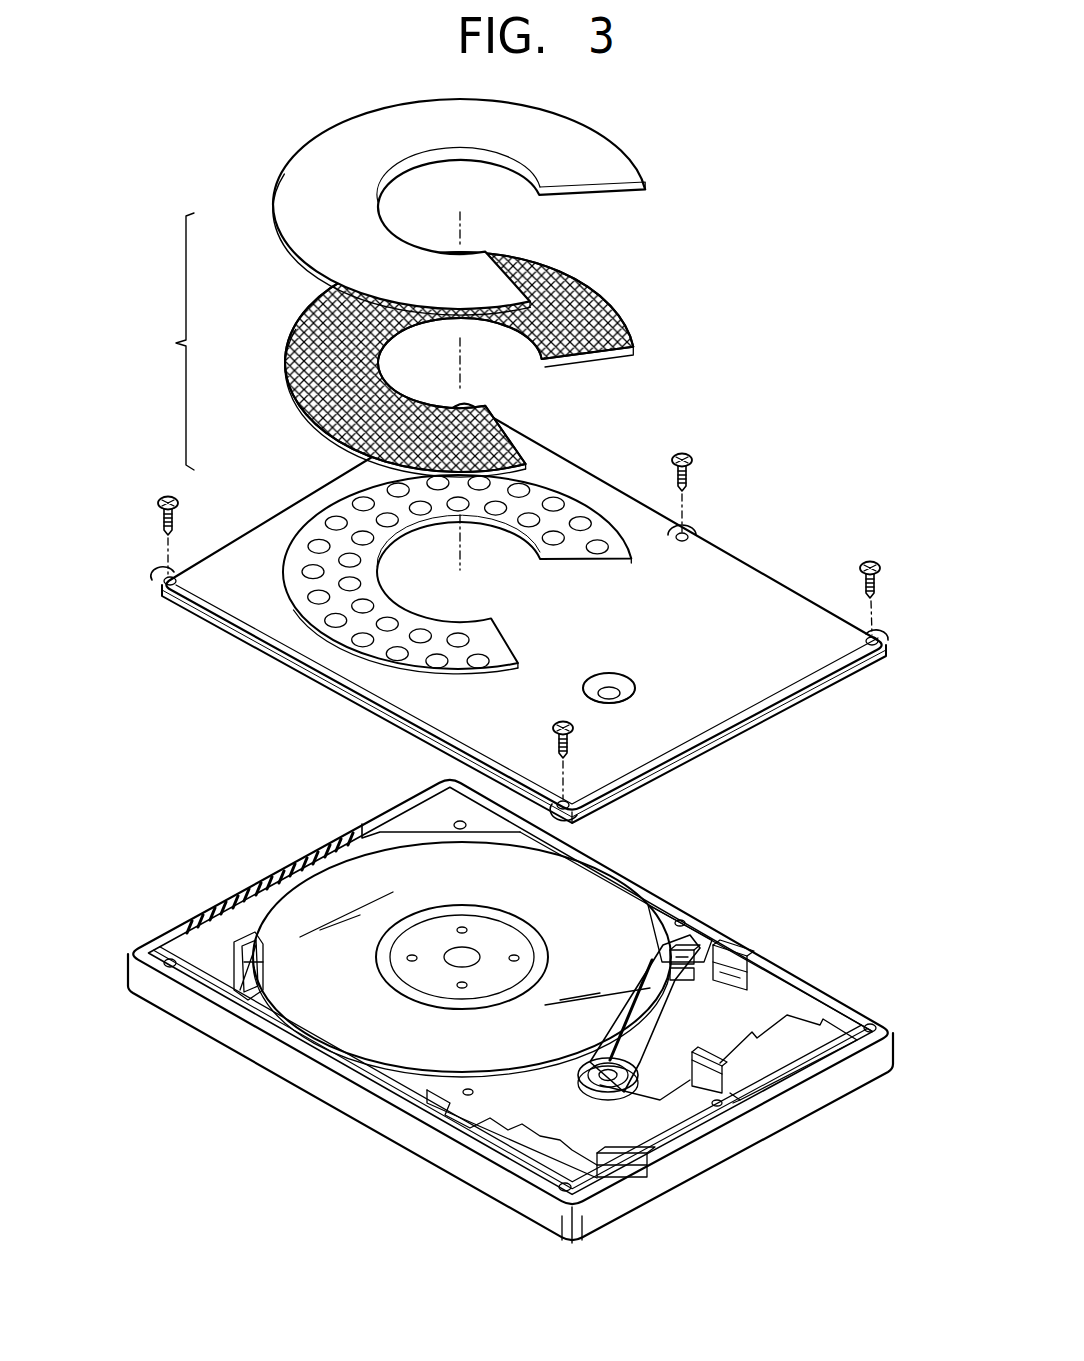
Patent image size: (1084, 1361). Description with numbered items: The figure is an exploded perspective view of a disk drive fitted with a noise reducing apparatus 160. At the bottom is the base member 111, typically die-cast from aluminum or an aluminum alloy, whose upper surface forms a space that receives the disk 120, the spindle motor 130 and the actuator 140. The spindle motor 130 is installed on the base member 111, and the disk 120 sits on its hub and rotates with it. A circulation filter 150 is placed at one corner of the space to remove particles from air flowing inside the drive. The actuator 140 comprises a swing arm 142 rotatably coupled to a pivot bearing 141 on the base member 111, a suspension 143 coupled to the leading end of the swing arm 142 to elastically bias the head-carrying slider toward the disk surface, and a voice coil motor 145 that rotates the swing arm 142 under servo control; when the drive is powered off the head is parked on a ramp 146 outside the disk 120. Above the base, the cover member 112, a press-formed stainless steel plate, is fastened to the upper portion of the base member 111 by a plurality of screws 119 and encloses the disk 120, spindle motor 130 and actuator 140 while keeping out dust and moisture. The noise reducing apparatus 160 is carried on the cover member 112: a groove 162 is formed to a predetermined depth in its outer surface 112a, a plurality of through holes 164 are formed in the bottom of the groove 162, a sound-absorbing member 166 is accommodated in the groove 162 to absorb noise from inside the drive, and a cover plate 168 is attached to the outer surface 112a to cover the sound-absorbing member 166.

The base member 111 is at (807, 1107).
The cover member 112 is at (519, 613).
The outer surface 112a is at (753, 568).
The screws 119 is at (868, 565).
The disk 120 is at (297, 903).
The spindle motor 130 is at (492, 933).
The actuator 140 is at (685, 977).
The pivot bearing 141 is at (580, 1060).
The swing arm 142 is at (638, 1040).
The suspension 143 is at (703, 937).
The voice coil motor 145 is at (613, 1163).
The ramp 146 is at (733, 950).
The circulation filter 150 is at (228, 948).
The noise reducing apparatus 160 is at (155, 341).
The groove 162 is at (297, 550).
The through holes 164 is at (337, 528).
The sound-absorbing member 166 is at (292, 332).
The cover plate 168 is at (278, 202).